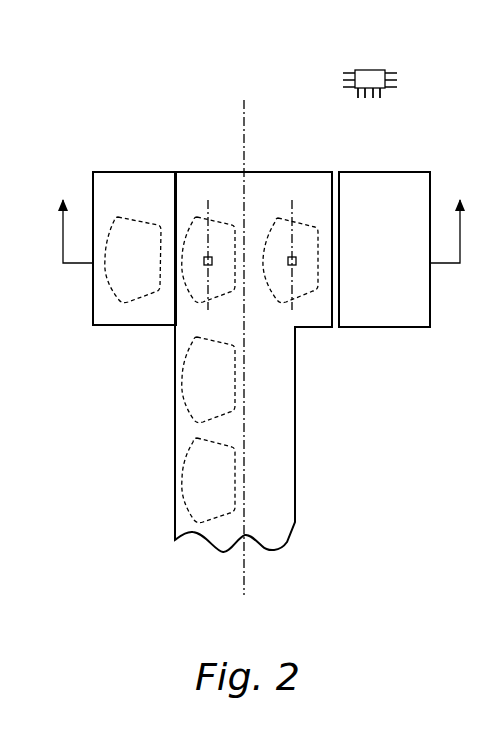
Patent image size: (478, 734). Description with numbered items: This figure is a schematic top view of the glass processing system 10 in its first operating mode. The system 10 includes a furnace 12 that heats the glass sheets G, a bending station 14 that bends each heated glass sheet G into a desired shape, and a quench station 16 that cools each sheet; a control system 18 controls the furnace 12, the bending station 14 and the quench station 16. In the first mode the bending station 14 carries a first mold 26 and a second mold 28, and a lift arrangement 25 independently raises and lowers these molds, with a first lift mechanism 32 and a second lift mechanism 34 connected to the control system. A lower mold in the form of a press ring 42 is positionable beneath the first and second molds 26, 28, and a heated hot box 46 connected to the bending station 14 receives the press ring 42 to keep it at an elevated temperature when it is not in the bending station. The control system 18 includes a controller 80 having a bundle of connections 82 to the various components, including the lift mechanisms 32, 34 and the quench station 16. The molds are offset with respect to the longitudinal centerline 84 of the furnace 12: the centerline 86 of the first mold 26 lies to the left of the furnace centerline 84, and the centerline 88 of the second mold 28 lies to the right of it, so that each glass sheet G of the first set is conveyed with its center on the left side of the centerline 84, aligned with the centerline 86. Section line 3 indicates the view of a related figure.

The glass processing system 10 is at (92, 444).
The furnace 12 is at (172, 420).
The bending station 14 is at (304, 342).
The quench station 16 is at (397, 338).
The control system 18 is at (387, 58).
The lift arrangement 25 is at (306, 261).
The first mold 26 is at (197, 306).
The second mold 28 is at (305, 300).
The section line 3 is at (260, 218).
The first lift mechanism 32 is at (206, 255).
The second lift mechanism 34 is at (295, 256).
The press ring 42 is at (136, 217).
The hot box 46 is at (106, 337).
The controller 80 is at (363, 70).
The bundle of connections 82 is at (389, 103).
The longitudinal centerline 84 is at (243, 573).
The centerline of the first mold 86 is at (208, 200).
The centerline of the second upper mold 88 is at (292, 200).
The glass sheet G is at (182, 383).